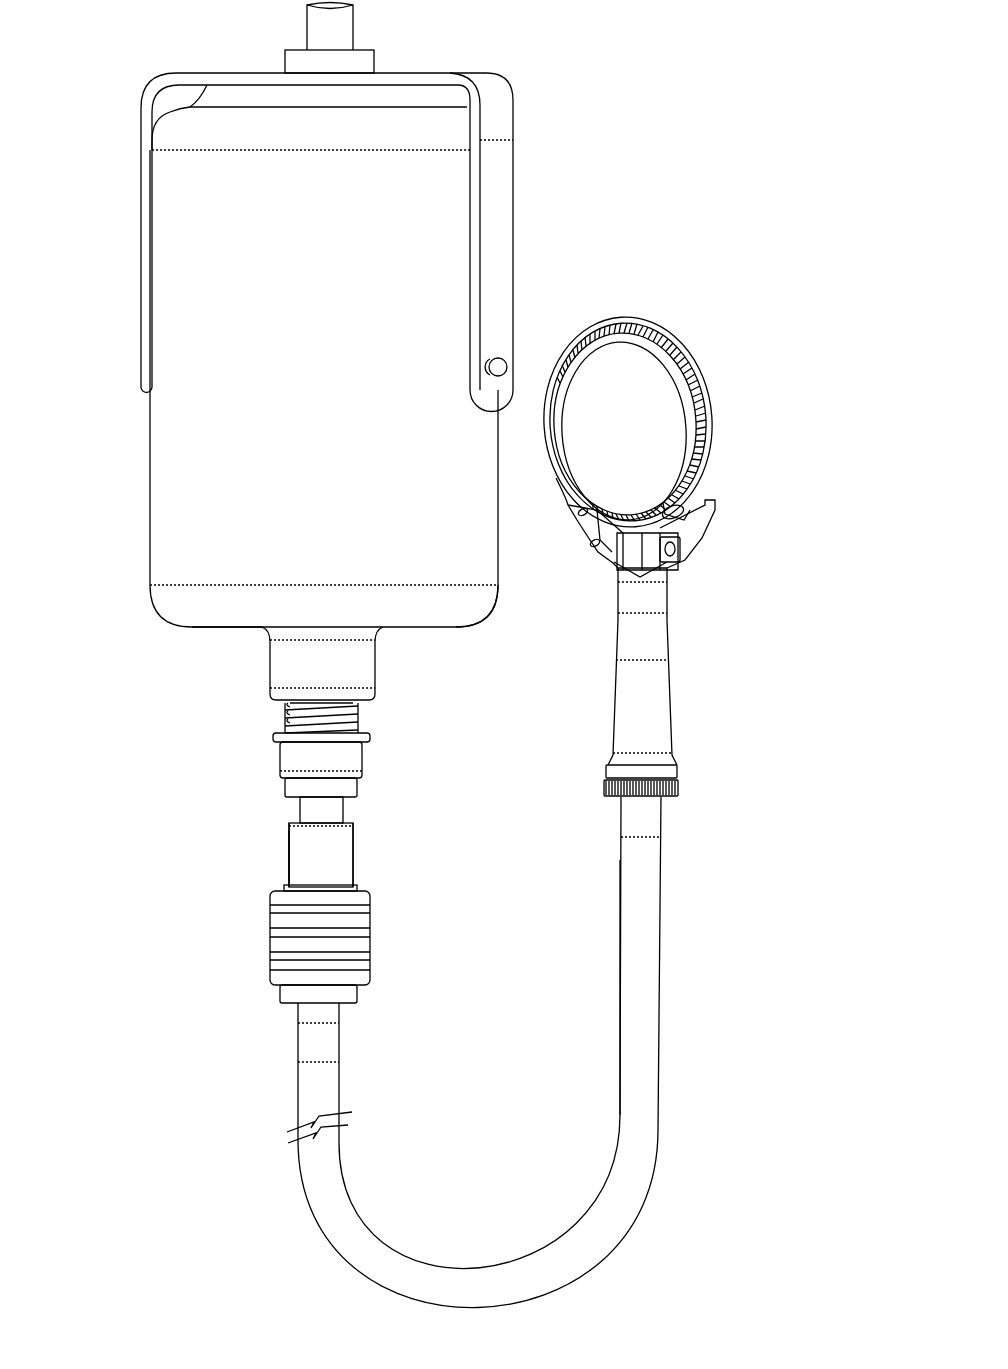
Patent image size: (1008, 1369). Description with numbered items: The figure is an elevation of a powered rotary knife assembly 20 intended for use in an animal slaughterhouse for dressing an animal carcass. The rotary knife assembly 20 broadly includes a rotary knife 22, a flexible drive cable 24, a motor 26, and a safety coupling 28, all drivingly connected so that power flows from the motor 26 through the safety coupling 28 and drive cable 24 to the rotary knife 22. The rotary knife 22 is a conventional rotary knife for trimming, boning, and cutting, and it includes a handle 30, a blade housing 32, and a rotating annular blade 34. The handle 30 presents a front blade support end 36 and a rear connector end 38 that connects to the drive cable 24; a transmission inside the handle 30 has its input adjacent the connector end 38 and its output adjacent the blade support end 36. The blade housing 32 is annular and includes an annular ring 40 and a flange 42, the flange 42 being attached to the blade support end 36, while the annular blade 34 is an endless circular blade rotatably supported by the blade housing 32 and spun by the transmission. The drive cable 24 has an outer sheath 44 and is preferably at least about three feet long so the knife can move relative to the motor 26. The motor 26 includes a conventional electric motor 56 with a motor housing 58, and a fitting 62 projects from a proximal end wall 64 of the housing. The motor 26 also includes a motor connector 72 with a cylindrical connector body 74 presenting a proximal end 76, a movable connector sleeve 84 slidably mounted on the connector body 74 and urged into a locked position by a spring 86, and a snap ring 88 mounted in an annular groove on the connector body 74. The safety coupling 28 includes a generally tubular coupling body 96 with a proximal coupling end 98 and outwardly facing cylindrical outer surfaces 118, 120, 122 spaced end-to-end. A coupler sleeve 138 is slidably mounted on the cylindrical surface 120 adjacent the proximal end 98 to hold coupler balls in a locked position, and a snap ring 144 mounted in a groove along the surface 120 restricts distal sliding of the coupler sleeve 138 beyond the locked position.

The powered rotary knife assembly 20 is at (678, 114).
The rotary knife 22 is at (660, 600).
The flexible drive cable 24 is at (655, 920).
The motor 26 is at (442, 228).
The safety coupling 28 is at (355, 835).
The handle 30 is at (662, 697).
The blade housing 32 is at (710, 478).
The rotating annular blade 34 is at (688, 437).
The front blade support end 36 is at (673, 453).
The rear connector end 38 is at (693, 800).
The annular ring 40 is at (708, 385).
The flange 42 is at (685, 520).
The outer sheath 44 is at (655, 1030).
The electric motor 56 is at (163, 482).
The motor housing 58 is at (470, 607).
The fitting 62 is at (360, 662).
The proximal end wall 64 is at (220, 628).
The motor connector 72 is at (365, 733).
The cylindrical connector body 74 is at (350, 788).
The proximal end 76 is at (348, 775).
The movable connector sleeve 84 is at (355, 760).
The spring 86 is at (290, 720).
The snap ring 88 is at (372, 708).
The coupling body 96 is at (298, 862).
The proximal coupling end 98 is at (323, 946).
The cylindrical outer surface 118 is at (348, 995).
The cylindrical outer surface 120 is at (348, 862).
The cylindrical outer surface 122 is at (305, 808).
The coupler sleeve 138 is at (365, 938).
The snap ring 144 is at (355, 885).